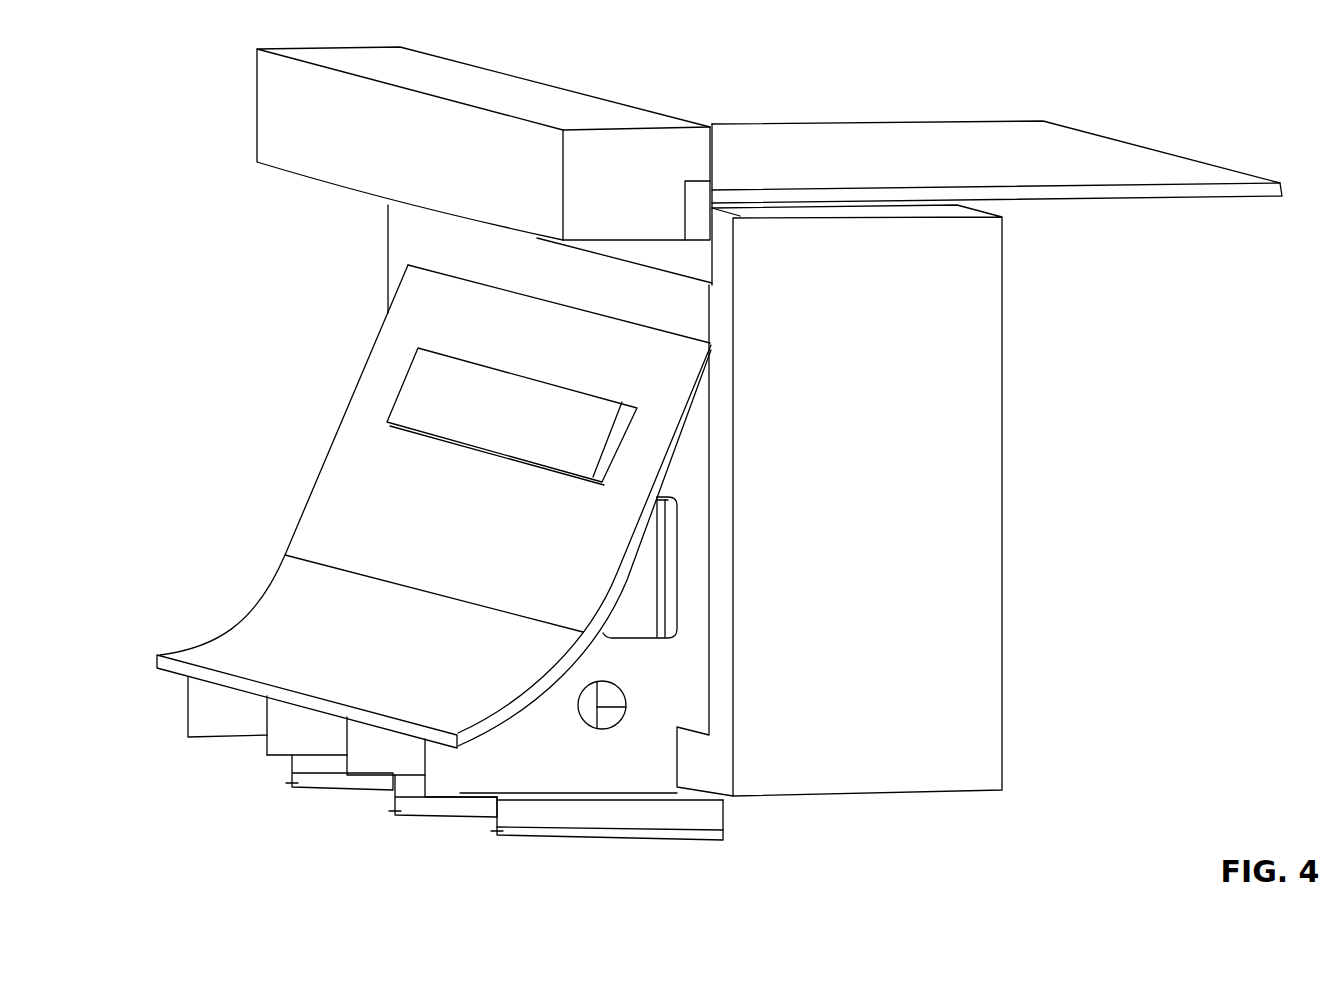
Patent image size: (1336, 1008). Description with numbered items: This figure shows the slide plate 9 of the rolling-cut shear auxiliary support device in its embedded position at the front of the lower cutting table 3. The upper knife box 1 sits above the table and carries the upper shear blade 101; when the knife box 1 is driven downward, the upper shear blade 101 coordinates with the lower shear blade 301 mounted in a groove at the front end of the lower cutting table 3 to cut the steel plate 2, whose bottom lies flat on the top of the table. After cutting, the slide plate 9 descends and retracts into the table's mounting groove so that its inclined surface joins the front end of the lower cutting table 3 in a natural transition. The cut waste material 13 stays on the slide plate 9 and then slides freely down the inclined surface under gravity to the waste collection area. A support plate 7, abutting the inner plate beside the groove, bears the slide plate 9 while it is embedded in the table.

The upper knife box 1 is at (445, 195).
The upper shear blade 101 is at (690, 198).
The steel plate 2 is at (932, 167).
The lower cutting table 3 is at (960, 420).
The lower shear blade 301 is at (678, 259).
The support plate 7 is at (660, 693).
The slide plate 9 is at (418, 555).
The waste material 13 is at (445, 402).